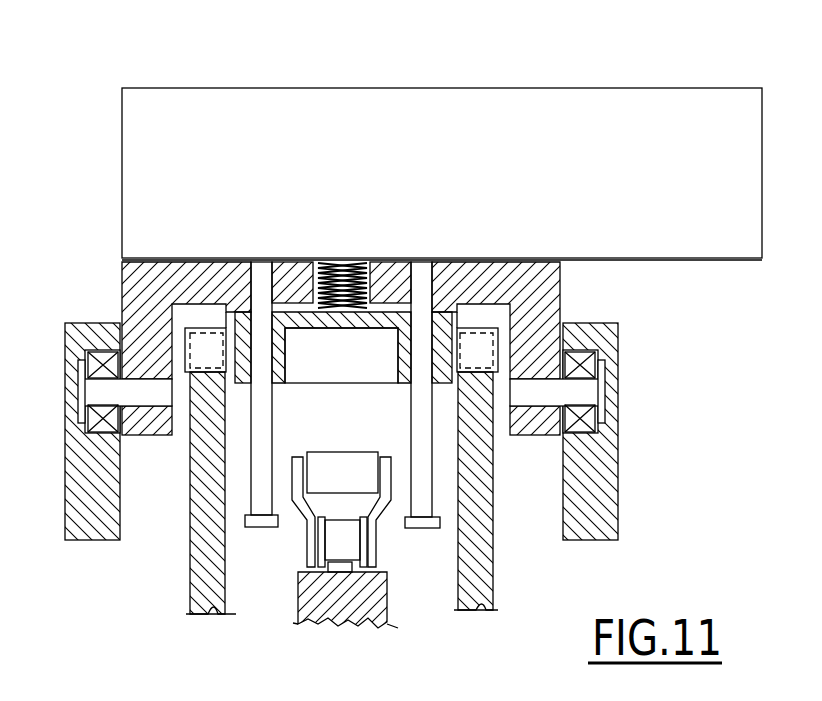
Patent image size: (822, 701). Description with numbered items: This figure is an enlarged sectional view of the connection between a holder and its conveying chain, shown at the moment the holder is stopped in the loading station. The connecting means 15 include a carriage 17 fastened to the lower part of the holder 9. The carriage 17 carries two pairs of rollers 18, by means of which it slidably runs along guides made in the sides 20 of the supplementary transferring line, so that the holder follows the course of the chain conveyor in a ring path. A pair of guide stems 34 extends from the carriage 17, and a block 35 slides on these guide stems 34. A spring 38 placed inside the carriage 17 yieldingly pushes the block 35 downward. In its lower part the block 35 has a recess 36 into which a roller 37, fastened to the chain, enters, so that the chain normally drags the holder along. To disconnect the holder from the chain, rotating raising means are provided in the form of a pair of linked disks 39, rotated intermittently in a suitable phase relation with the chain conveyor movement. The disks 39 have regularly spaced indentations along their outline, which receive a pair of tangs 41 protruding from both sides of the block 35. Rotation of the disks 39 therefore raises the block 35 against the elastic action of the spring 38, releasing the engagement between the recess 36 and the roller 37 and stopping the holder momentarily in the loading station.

The holder 9 is at (598, 108).
The connecting means 15 is at (92, 245).
The carriage 17 is at (142, 297).
The rollers 18 is at (105, 433).
The sides 20 is at (72, 522).
The guide stems 34 is at (415, 413).
The block 35 is at (445, 345).
The recess 36 is at (377, 344).
The roller 37 is at (320, 483).
The spring 38 is at (344, 268).
The linked disks 39 is at (203, 582).
The tangs 41 is at (222, 330).